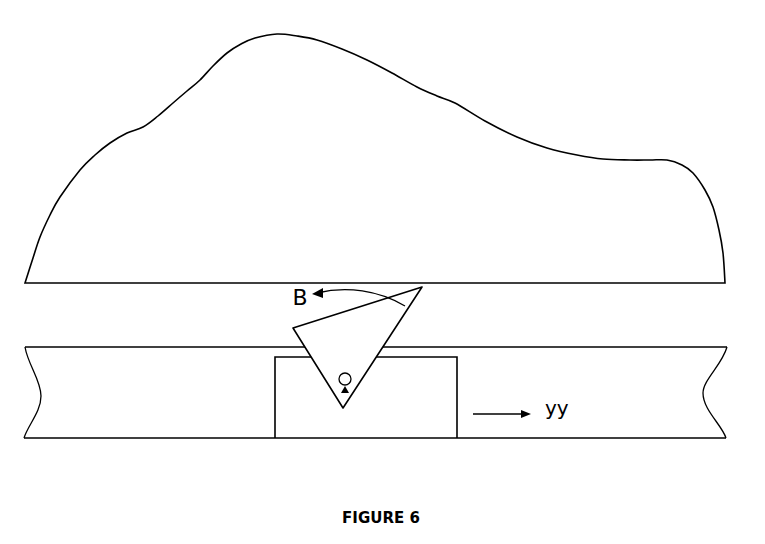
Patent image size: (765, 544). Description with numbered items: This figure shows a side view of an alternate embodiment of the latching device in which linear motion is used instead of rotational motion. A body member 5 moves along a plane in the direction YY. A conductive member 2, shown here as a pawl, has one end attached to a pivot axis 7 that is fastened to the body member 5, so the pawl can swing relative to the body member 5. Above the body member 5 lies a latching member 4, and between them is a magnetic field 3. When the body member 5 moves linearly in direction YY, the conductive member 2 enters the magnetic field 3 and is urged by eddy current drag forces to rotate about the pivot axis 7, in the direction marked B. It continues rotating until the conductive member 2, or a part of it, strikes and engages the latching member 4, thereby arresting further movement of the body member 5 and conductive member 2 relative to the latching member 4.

The conductive member 2 is at (362, 354).
The magnetic field 3 is at (375, 370).
The latching member 4 is at (375, 158).
The body member 5 is at (295, 428).
The pivot axis 7 is at (345, 392).